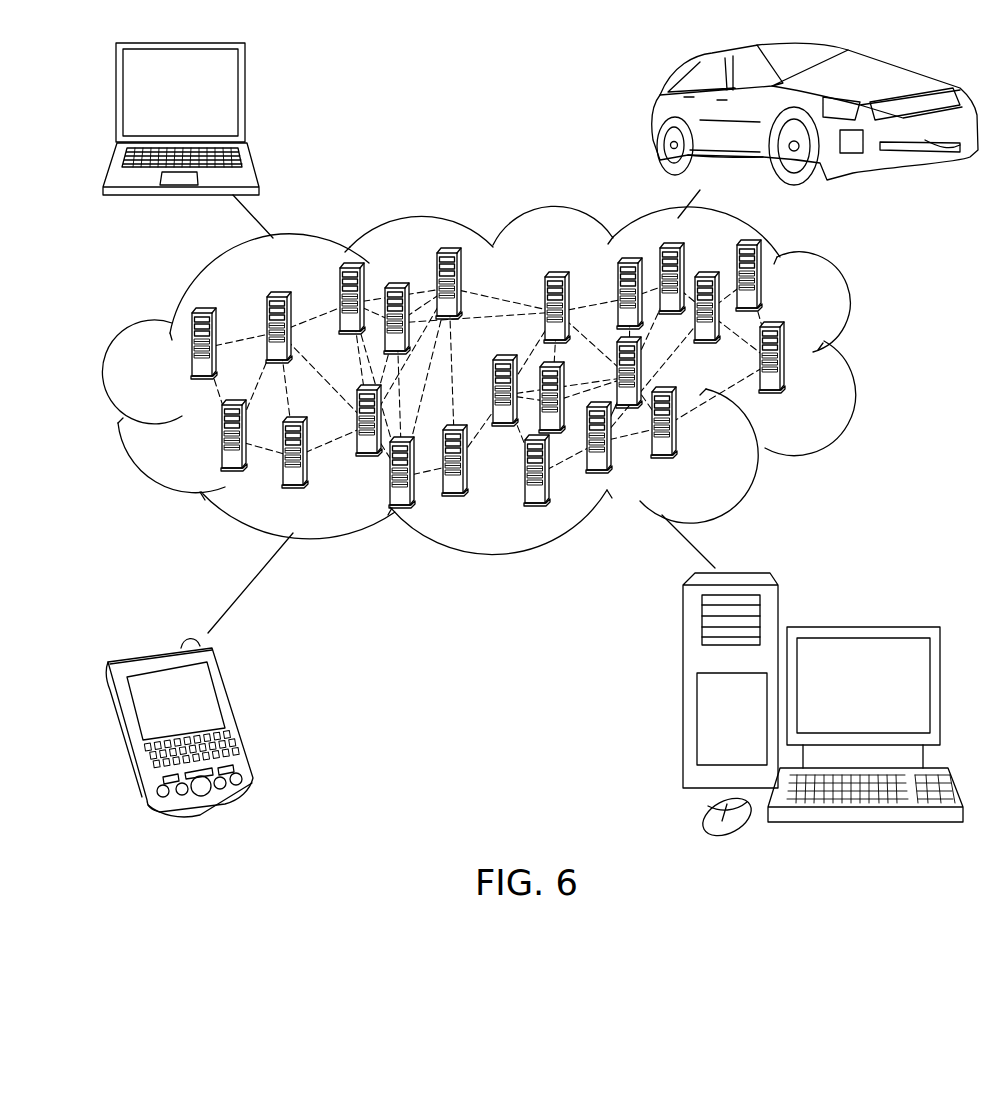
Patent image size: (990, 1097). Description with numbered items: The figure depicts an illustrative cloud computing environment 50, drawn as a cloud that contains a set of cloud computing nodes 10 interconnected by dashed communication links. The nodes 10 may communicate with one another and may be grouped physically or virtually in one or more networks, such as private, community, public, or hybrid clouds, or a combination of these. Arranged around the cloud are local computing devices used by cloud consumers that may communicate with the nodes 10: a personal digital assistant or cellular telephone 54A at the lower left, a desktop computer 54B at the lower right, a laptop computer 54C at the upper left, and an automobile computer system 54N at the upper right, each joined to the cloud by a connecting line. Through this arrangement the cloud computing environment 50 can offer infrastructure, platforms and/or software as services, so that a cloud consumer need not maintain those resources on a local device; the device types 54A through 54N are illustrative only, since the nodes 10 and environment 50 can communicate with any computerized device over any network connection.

The cloud computing nodes 10 is at (808, 384).
The cloud computing environment 50 is at (860, 353).
The personal digital assistant (PDA) or cellular telephone 54A is at (237, 717).
The desktop computer 54B is at (860, 627).
The laptop computer 54C is at (245, 100).
The automobile computer system 54N is at (653, 110).